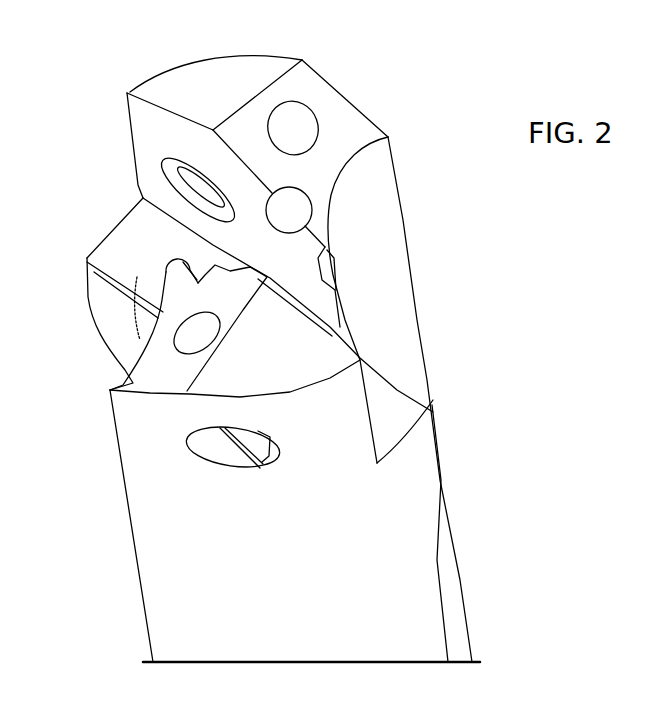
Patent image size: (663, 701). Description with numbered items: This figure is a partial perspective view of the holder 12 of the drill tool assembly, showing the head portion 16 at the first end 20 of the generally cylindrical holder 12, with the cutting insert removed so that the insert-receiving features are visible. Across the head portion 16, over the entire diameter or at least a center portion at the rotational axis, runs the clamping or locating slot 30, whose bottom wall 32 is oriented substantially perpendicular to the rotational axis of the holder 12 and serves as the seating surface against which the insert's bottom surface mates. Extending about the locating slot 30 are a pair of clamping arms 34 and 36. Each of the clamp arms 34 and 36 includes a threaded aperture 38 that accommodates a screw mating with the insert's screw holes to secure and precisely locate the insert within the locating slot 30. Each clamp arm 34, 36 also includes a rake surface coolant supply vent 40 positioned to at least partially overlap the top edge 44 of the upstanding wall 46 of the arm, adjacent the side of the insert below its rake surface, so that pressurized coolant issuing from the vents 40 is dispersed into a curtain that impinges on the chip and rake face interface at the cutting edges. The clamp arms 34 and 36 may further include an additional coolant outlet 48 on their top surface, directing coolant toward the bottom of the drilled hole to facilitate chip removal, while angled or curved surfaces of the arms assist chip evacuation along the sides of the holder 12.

The holder 12 is at (440, 192).
The head portion 16 is at (149, 54).
The first end 20 is at (378, 123).
The locating slot 30 is at (383, 404).
The bottom wall 32 is at (130, 242).
The clamping arm 34 is at (167, 90).
The clamping arm 36 is at (287, 360).
The aperture 38 is at (172, 178).
The rake surface coolant supply vent 40 is at (312, 210).
The top edge 44 is at (242, 158).
The upstanding wall 46 is at (295, 275).
The coolant outlet 48 is at (185, 337).